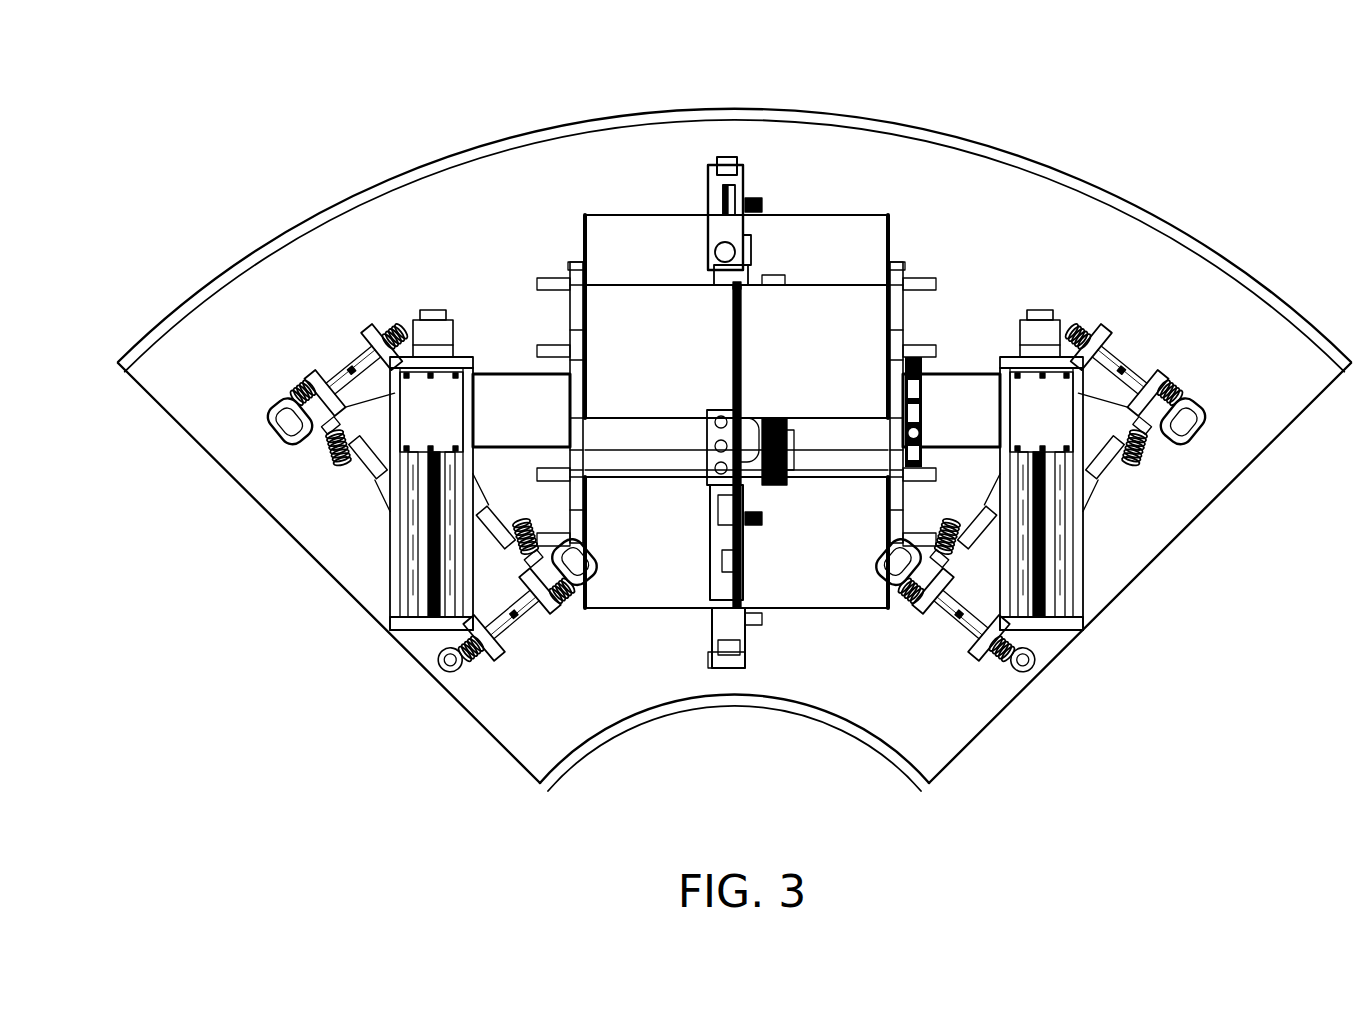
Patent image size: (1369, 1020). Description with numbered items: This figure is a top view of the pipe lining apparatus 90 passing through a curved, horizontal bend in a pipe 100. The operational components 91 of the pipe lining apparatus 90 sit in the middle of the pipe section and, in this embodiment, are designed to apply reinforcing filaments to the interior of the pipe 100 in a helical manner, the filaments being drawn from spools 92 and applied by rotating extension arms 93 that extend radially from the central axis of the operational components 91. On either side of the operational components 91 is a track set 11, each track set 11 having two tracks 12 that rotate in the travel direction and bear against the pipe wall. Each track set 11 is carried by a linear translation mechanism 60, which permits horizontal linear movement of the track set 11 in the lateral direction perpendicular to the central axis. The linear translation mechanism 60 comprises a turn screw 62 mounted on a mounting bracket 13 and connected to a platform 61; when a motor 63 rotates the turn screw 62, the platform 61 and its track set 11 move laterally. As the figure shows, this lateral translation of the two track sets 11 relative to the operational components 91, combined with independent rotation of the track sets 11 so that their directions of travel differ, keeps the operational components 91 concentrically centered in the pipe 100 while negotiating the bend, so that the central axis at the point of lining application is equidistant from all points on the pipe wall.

The pipe 100 is at (1163, 215).
The track set 11 is at (330, 515).
The track 12 is at (284, 433).
The mounting bracket 13 is at (447, 422).
The linear translation mechanism 60 is at (480, 329).
The platform 61 is at (388, 552).
The turn screw 62 is at (405, 603).
The motor 63 is at (437, 310).
The pipe lining apparatus 90 is at (985, 197).
The operational components 91 is at (938, 309).
The spool 92 is at (815, 212).
The rotating extension arm 93 is at (727, 155).